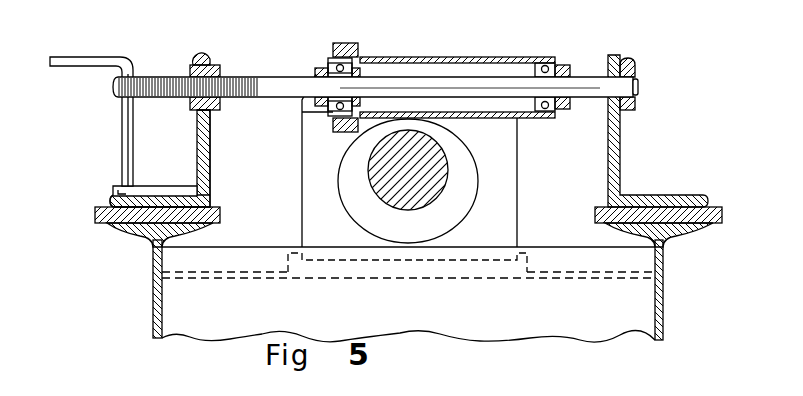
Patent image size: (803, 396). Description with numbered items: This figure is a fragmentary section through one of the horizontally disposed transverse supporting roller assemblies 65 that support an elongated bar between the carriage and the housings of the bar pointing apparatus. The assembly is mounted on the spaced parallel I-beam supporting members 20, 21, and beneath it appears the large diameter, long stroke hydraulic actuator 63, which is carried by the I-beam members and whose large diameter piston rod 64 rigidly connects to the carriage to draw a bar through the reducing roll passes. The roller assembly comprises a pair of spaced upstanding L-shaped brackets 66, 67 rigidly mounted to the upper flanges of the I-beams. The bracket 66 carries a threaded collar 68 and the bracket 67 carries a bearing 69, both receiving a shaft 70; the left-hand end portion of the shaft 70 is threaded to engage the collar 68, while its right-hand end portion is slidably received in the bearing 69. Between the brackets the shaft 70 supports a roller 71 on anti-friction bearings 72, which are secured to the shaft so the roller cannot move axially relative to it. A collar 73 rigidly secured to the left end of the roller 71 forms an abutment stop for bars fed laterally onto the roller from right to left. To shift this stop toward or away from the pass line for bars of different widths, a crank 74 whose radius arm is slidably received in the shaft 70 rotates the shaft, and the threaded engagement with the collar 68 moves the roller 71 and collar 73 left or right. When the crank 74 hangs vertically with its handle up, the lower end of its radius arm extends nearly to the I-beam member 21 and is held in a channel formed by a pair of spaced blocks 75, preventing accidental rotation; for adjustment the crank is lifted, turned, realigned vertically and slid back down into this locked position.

The I-beam supporting member 20 is at (663, 320).
The I-beam supporting member 21 is at (160, 322).
The hydraulic actuator 63 is at (512, 168).
The piston rod 64 is at (432, 162).
The transverse supporting roller assembly 65 is at (500, 46).
The L-shaped bracket 66 is at (207, 155).
The L-shaped bracket 67 is at (622, 150).
The threaded collar 68 is at (215, 65).
The bearing 69 is at (627, 70).
The shaft 70 is at (283, 80).
The roller 71 is at (420, 58).
The anti-friction bearing 72 is at (318, 108).
The collar 73 is at (348, 45).
The crank 74 is at (103, 60).
The spaced blocks 75 is at (152, 186).